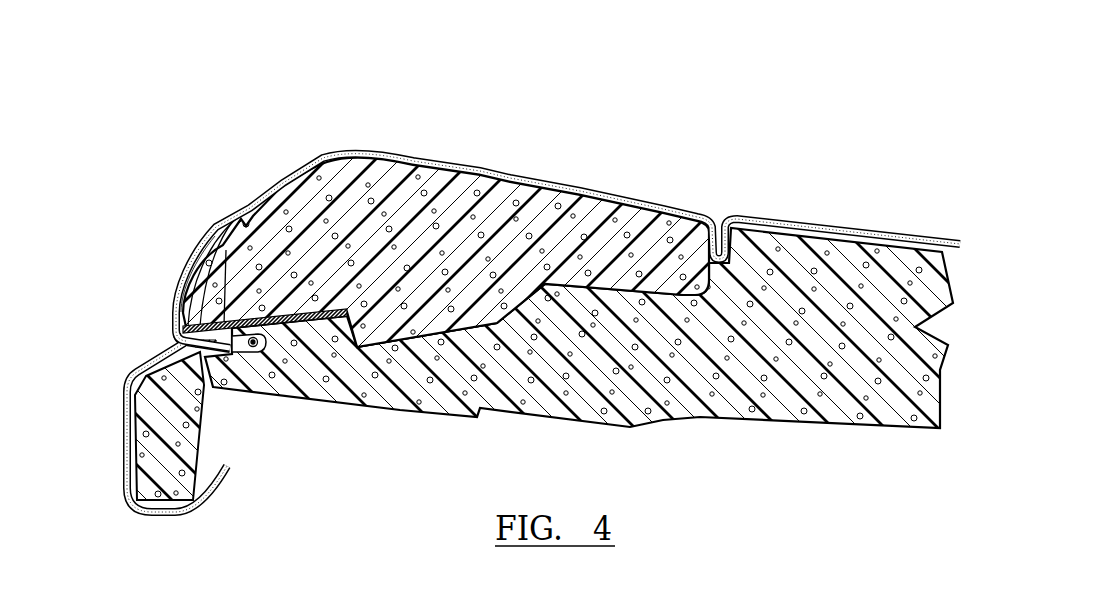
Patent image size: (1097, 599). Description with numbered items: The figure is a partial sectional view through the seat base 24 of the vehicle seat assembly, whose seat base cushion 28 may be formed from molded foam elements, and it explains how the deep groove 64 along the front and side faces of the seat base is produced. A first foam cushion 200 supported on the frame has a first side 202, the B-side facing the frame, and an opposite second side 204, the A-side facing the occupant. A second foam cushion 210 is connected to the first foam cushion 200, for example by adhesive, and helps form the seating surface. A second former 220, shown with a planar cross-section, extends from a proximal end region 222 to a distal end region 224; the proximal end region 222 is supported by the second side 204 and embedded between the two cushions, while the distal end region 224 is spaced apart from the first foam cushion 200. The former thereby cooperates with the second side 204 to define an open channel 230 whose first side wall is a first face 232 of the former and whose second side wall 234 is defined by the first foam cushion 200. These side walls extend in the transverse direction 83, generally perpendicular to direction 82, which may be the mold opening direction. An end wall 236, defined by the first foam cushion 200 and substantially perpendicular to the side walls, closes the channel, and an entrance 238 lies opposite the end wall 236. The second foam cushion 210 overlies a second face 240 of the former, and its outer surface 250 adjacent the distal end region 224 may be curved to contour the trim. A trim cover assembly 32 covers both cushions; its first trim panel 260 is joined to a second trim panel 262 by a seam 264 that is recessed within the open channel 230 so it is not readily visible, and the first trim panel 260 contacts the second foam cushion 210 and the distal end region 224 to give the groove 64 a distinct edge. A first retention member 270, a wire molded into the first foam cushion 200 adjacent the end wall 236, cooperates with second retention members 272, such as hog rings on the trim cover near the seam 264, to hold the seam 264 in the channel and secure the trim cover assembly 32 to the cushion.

The seat base 24 is at (775, 153).
The seat base cushion 28 is at (548, 344).
The trim cover assembly 32 is at (524, 329).
The groove 64 is at (126, 357).
The direction 82 is at (675, 113).
The transverse direction 83 is at (675, 113).
The first foam cushion 200 is at (548, 344).
The first side 202 is at (633, 426).
The second side 204 is at (565, 278).
The second foam cushion 210 is at (471, 220).
The second former 220 is at (318, 330).
The proximal end region 222 is at (350, 343).
The distal end region 224 is at (196, 286).
The open channel 230 is at (214, 325).
The first face 232 is at (222, 222).
The second side wall 234 is at (205, 346).
The end wall 236 is at (187, 326).
The entrance 238 is at (153, 341).
The second face 240 is at (208, 243).
The outer surface 250 is at (191, 300).
The first trim panel 260 is at (437, 160).
The second trim panel 262 is at (134, 503).
The seam 264 is at (198, 430).
The first retention member 270 is at (266, 343).
The second retention member 272 is at (257, 348).